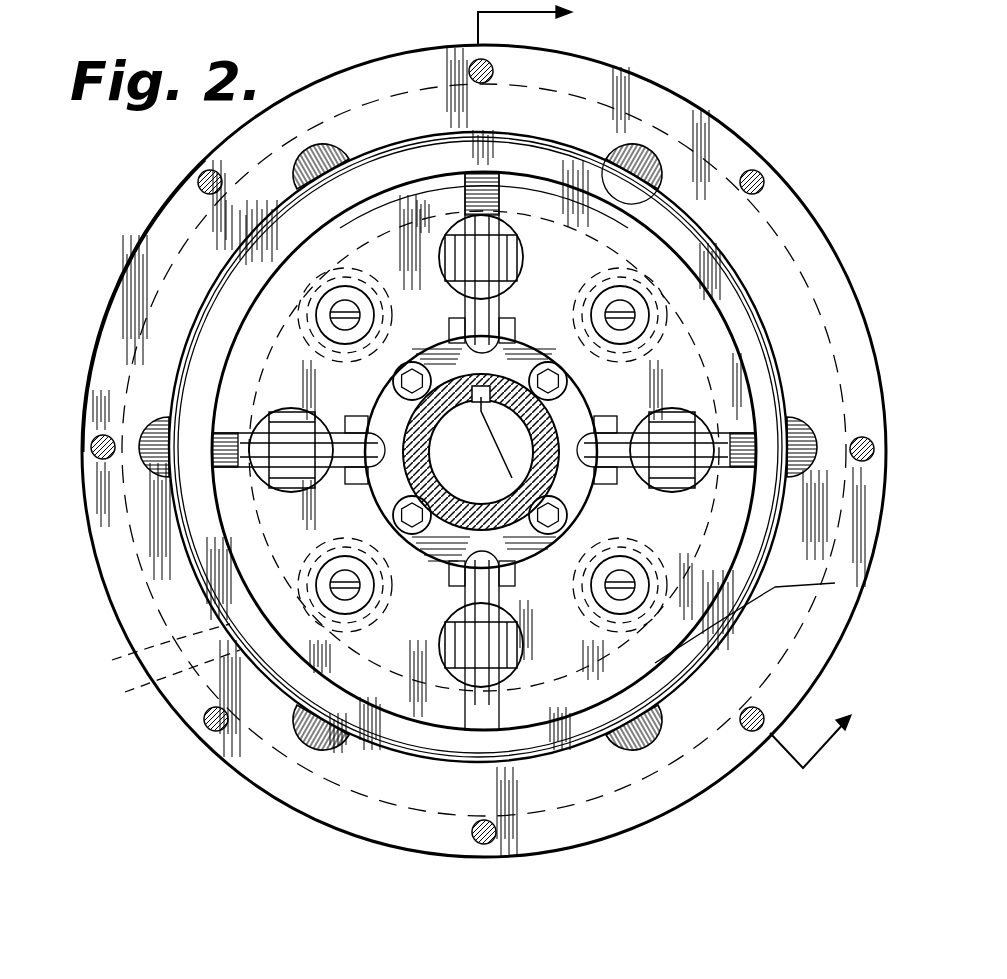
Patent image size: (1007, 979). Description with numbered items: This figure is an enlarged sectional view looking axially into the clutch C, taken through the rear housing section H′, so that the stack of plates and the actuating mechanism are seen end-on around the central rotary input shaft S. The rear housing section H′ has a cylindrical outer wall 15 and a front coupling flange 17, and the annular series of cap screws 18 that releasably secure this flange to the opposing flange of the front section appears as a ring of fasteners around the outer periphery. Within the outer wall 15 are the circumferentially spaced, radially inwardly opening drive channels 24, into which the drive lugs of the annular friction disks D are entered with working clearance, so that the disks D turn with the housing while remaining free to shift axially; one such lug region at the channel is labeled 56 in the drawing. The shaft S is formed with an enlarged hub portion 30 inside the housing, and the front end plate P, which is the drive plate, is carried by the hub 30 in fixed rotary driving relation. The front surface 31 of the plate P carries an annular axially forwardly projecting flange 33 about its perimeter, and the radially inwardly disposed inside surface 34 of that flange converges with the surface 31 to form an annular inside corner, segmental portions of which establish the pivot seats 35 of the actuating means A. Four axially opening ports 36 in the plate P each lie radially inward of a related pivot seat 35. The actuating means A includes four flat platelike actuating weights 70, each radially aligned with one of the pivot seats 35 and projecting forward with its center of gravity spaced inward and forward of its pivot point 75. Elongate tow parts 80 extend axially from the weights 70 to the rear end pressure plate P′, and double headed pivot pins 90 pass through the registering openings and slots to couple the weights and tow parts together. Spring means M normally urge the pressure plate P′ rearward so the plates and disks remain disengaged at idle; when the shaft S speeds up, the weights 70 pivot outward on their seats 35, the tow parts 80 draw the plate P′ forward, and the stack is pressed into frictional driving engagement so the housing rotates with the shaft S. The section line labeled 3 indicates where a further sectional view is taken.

The rear housing section H′ is at (393, 20).
The section line 3- 3 is at (666, 391).
The front coupling flange 17 is at (593, 63).
The cylindrical outer wall 15 is at (530, 83).
The cap screws 18 is at (760, 176).
The clutch C is at (198, 160).
The front end plate P is at (563, 113).
The drive channels 24 is at (700, 150).
The friction disks D is at (652, 140).
The lug 56 is at (663, 150).
The front surface 31 is at (400, 196).
The flange 33 is at (393, 163).
The pivot seats 35 is at (358, 200).
The inside surface 34 is at (325, 233).
The rotary input shaft S is at (605, 403).
The actuating weights 70 is at (372, 416).
The spring means M is at (655, 298).
The ports 36 is at (660, 478).
The actuating means A is at (494, 168).
The hub portion 30 is at (570, 622).
The pivot points 75 is at (272, 432).
The tow parts 80 is at (290, 488).
The pivot pins 90 is at (282, 504).
The rear end pressure plate P′ is at (154, 650).